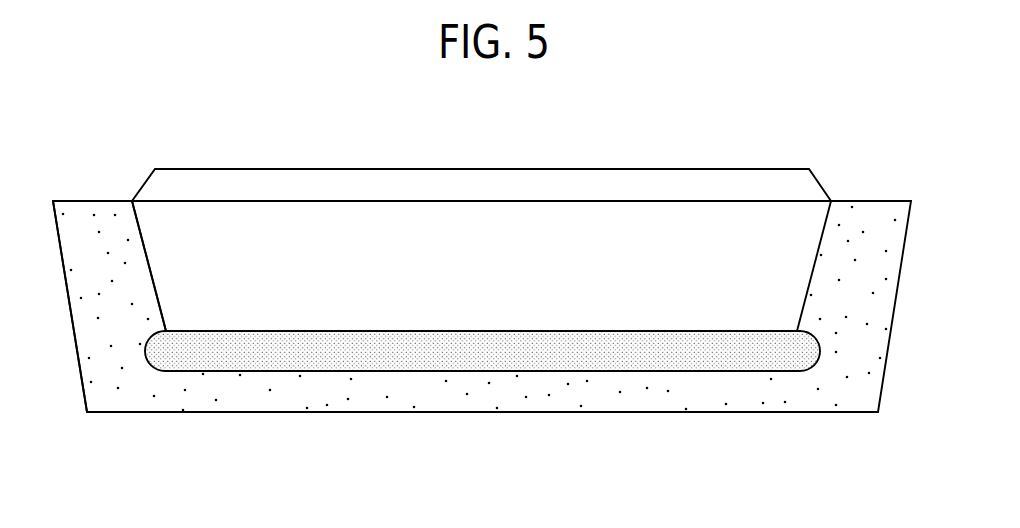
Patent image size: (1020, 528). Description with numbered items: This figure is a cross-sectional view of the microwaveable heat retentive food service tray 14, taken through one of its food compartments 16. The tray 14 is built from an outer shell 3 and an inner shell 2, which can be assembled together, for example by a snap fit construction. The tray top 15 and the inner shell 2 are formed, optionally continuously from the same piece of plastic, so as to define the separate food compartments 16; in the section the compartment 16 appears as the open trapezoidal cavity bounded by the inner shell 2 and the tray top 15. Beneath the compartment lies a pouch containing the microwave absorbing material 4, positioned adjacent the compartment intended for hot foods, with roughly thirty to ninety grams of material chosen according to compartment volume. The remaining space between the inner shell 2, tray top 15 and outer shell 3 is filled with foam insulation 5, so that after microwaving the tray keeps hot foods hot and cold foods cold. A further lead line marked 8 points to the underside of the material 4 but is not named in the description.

The inner shell 2 is at (808, 285).
The outer shell 3 is at (716, 413).
The microwave absorbing material 4 is at (383, 363).
The foam insulation 5 is at (113, 342).
The bottom surface of layer 8 is at (527, 371).
The food service tray 14 is at (340, 158).
The tray top 15 is at (110, 200).
The food compartments 16 is at (586, 214).